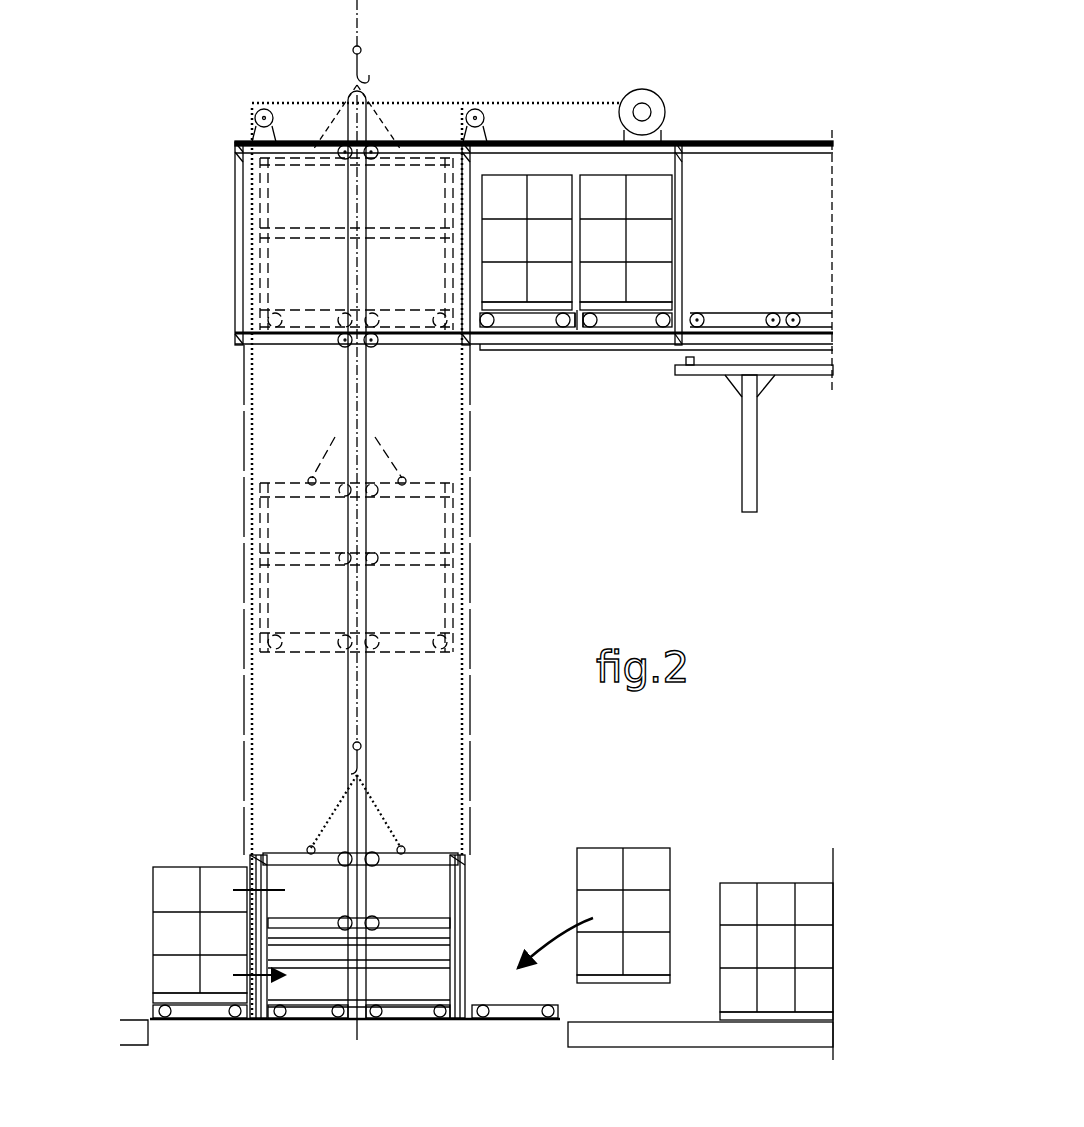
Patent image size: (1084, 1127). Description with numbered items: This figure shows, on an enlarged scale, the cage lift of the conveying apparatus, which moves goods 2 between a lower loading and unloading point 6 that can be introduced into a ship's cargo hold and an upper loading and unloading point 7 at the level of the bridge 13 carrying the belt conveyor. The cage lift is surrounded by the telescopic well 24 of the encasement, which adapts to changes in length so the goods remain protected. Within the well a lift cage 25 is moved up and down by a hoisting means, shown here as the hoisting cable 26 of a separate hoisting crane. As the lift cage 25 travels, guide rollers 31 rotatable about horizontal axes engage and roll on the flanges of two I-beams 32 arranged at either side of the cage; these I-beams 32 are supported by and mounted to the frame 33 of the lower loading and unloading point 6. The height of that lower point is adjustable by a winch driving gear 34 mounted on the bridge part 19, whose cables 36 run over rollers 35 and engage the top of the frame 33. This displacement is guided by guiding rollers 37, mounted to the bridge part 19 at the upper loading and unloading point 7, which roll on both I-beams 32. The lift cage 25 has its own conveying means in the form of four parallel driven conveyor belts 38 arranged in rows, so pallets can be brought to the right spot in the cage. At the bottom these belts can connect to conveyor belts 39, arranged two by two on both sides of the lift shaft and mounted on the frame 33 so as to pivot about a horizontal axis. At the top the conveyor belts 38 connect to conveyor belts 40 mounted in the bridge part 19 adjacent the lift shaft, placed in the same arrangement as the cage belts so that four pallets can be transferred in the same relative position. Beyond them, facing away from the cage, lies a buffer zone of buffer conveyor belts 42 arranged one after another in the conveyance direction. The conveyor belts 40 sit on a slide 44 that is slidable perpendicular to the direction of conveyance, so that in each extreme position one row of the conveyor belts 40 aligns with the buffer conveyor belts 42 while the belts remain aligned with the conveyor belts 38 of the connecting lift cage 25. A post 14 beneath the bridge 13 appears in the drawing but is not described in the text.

The goods 2 is at (655, 245).
The lower loading and unloading point 6 is at (232, 1024).
The upper loading and unloading point 7 is at (502, 356).
The bridge 13 is at (800, 375).
The support post 14 is at (757, 460).
The bridge part 19 is at (660, 352).
The telescopic well 24 is at (243, 660).
The lift cage 25 is at (262, 552).
The hoisting cable 26 is at (360, 26).
The guide rollers 31 is at (372, 850).
The I-beams 32 is at (358, 428).
The frame 33 is at (460, 918).
The winch driving gear 34 is at (650, 100).
The rollers 35 is at (264, 108).
The cables 36 is at (252, 762).
The guiding rollers 37 is at (350, 159).
The conveyor belts 38 is at (365, 1015).
The conveyor belts 39 is at (193, 1012).
The conveyor belts 40 is at (532, 330).
The buffer conveyor belts 42 is at (736, 318).
The slide 44 is at (577, 330).